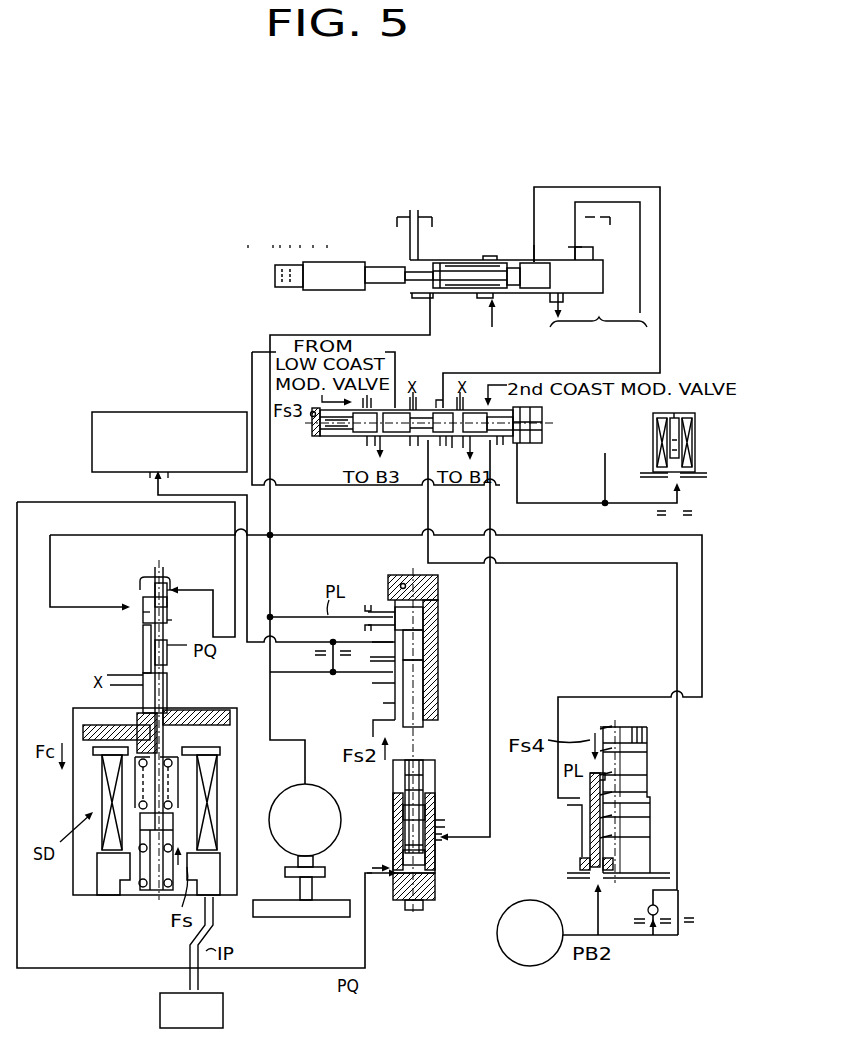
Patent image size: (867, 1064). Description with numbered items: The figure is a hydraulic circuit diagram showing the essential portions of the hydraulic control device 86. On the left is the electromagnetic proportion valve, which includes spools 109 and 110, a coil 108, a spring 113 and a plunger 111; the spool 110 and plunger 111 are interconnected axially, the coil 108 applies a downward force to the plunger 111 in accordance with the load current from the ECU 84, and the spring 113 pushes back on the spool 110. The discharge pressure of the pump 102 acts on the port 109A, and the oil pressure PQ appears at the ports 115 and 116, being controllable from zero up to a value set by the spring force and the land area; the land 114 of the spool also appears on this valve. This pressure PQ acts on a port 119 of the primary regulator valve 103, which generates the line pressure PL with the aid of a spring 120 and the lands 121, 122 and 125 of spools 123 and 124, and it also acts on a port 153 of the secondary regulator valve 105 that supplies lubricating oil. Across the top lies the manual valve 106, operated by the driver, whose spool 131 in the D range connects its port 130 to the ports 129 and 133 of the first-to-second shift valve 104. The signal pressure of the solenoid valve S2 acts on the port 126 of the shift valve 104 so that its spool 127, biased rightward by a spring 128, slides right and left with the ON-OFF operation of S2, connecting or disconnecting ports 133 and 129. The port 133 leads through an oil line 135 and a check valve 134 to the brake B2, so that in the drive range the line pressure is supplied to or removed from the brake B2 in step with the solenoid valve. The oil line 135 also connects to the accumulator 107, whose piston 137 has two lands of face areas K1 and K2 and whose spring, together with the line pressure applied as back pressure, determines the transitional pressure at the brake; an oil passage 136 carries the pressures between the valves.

The ECU 84 is at (227, 1012).
The hydraulic control device 86 is at (555, 180).
The pump 102 is at (330, 820).
The primary regulator valve 103 is at (424, 924).
The 1-2 shift valve 104 is at (533, 449).
The secondary regulator valve 105 is at (173, 410).
The manual valve 106 is at (457, 277).
The accumulator 107 is at (582, 822).
The coil 108 is at (213, 800).
The spool 109 is at (158, 583).
The port / land 109A is at (148, 603).
The spool 110 is at (168, 703).
The plunger 111 is at (238, 712).
The spring 113 is at (173, 840).
The spool land 114 is at (138, 620).
The port 115 is at (179, 635).
The port 116 is at (180, 588).
The port 119 is at (383, 875).
The spring 120 is at (435, 755).
The land 121 is at (423, 612).
The land 122 is at (435, 822).
The spool 123 is at (423, 677).
The spool 124 is at (438, 820).
The land 125 is at (437, 857).
The port 126 is at (507, 440).
The spool 127 is at (347, 438).
The spring 128 is at (312, 440).
The port 129 is at (440, 407).
The port 130 is at (533, 253).
The spool 131 is at (470, 278).
The port 133 is at (443, 438).
The check valve 134 is at (690, 923).
The oil line 135 is at (673, 605).
The oil passage 136 is at (272, 533).
The accumulator piston 137 is at (647, 770).
The port 153 is at (147, 474).
The solenoid valve S2 is at (695, 440).
The face area of accumulator piston land K1 is at (640, 858).
The face area of accumulator piston land K2 is at (625, 778).
The brake B2 is at (530, 933).